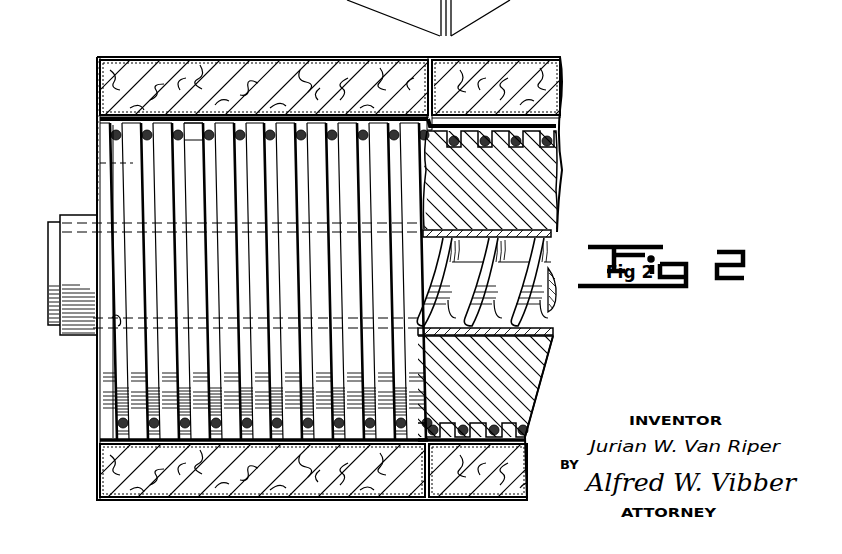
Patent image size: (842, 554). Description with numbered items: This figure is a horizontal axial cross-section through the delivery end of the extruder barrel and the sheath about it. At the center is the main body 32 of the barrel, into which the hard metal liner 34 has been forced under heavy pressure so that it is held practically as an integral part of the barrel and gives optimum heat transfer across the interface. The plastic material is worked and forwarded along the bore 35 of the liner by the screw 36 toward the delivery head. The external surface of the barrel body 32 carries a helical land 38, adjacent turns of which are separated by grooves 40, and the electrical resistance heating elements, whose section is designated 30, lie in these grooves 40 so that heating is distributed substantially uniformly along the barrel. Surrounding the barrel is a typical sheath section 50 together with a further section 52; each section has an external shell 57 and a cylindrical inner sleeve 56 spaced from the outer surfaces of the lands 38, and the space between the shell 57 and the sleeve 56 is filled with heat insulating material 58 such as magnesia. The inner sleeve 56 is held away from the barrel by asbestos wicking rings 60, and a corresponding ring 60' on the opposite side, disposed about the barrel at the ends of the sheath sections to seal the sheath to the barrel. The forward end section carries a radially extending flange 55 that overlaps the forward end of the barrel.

The heating element section 30 is at (260, 112).
The main body of the barrel 32 is at (95, 186).
The metal liner 34 is at (50, 240).
The bore of the liner 35 is at (113, 333).
The screw 36 is at (557, 262).
The helical land 38 is at (236, 124).
The grooves 40 is at (150, 122).
The section of sheath 50 is at (345, 57).
The right housing section 52 is at (553, 58).
The radially extending flange 55 is at (96, 148).
The inner sleeve 56 is at (189, 132).
The external shell 57 is at (110, 57).
The heat insulating material 58 is at (108, 88).
The asbestos wicking rings 60 is at (299, 89).
The lower rail plate 60' is at (281, 451).